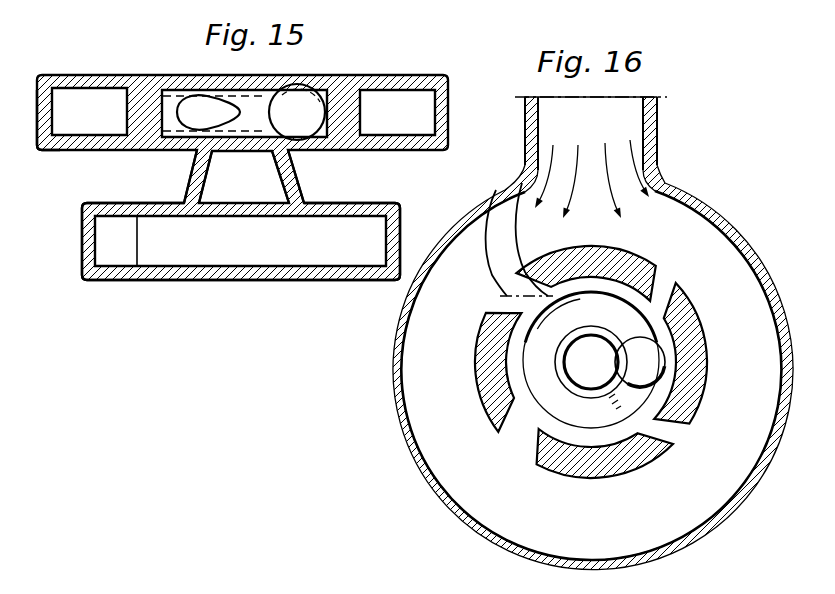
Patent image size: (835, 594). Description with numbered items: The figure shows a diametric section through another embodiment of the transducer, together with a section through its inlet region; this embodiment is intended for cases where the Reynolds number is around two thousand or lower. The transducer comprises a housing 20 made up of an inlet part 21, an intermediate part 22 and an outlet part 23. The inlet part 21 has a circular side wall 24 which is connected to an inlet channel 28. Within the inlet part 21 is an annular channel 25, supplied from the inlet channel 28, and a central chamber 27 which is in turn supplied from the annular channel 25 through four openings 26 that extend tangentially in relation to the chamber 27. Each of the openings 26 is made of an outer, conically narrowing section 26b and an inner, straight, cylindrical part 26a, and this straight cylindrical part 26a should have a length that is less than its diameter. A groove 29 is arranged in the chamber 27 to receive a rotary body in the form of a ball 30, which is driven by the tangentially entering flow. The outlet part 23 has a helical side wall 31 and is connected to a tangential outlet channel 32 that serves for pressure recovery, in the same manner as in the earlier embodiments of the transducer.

In FIG. 15, the housing 20 is at (236, 302).
In FIG. 15, the inlet part 21 is at (81, 82).
In FIG. 15, the intermediate part 22 is at (191, 184).
In FIG. 15, the outlet part 23 is at (133, 282).
In FIG. 15, the circular side wall 24 is at (40, 148).
In FIG. 16, the circular side wall 24 is at (394, 363).
In FIG. 15, the annular channel 25 is at (92, 105).
In FIG. 16, the annular channel 25 is at (438, 325).
In FIG. 15, the openings 26 is at (181, 83).
In FIG. 16, the inner straight cylindrical part 26a is at (500, 189).
In FIG. 16, the outer conically narrowing section 26b is at (472, 212).
In FIG. 15, the central chamber 27 is at (253, 122).
In FIG. 16, the central chamber 27 is at (503, 407).
In FIG. 16, the inlet channel 28 is at (656, 118).
In FIG. 16, the groove 29 is at (561, 406).
In FIG. 15, the ball 30 is at (307, 108).
In FIG. 16, the ball 30 is at (640, 348).
In FIG. 15, the helical side wall 31 is at (86, 214).
In FIG. 15, the tangential outlet channel 32 is at (110, 242).